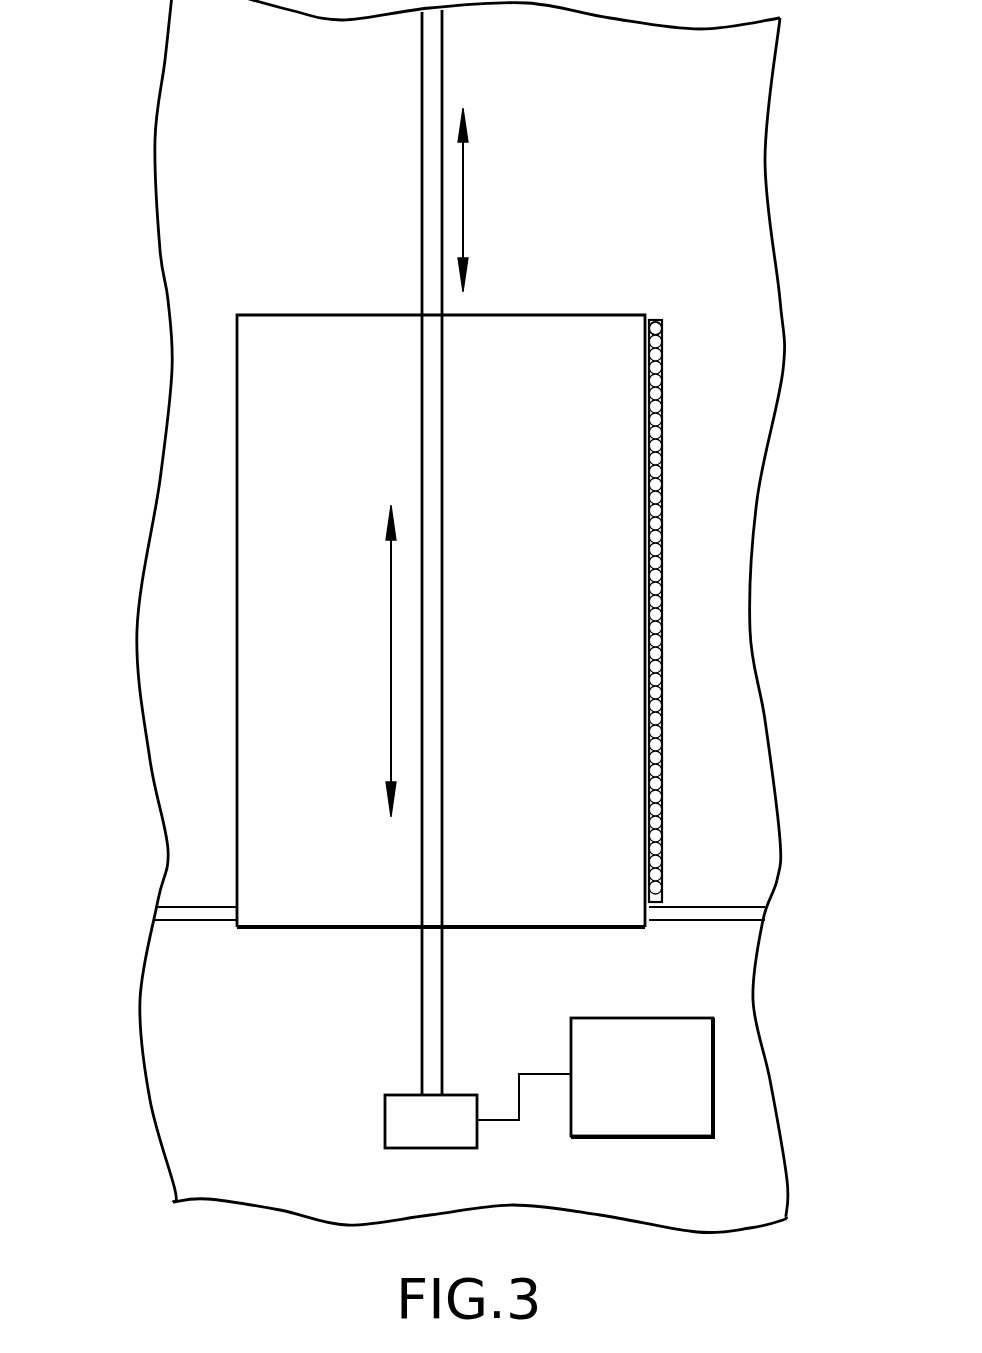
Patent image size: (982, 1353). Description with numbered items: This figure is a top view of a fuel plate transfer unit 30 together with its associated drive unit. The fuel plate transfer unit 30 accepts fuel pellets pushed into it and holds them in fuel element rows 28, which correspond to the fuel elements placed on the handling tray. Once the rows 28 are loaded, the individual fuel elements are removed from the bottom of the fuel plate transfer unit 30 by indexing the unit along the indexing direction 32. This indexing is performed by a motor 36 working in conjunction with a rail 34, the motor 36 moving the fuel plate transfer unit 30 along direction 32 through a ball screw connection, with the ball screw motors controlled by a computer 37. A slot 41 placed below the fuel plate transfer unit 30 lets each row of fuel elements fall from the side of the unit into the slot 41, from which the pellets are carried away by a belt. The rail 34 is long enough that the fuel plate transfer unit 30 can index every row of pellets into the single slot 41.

The fuel element rows 28 is at (660, 628).
The fuel plate transfer unit 30 is at (253, 470).
The indexing direction 32 is at (483, 200).
The rail 34 is at (426, 78).
The motor 36 is at (390, 1118).
The computer 37 is at (624, 1095).
The slot 41 is at (712, 912).